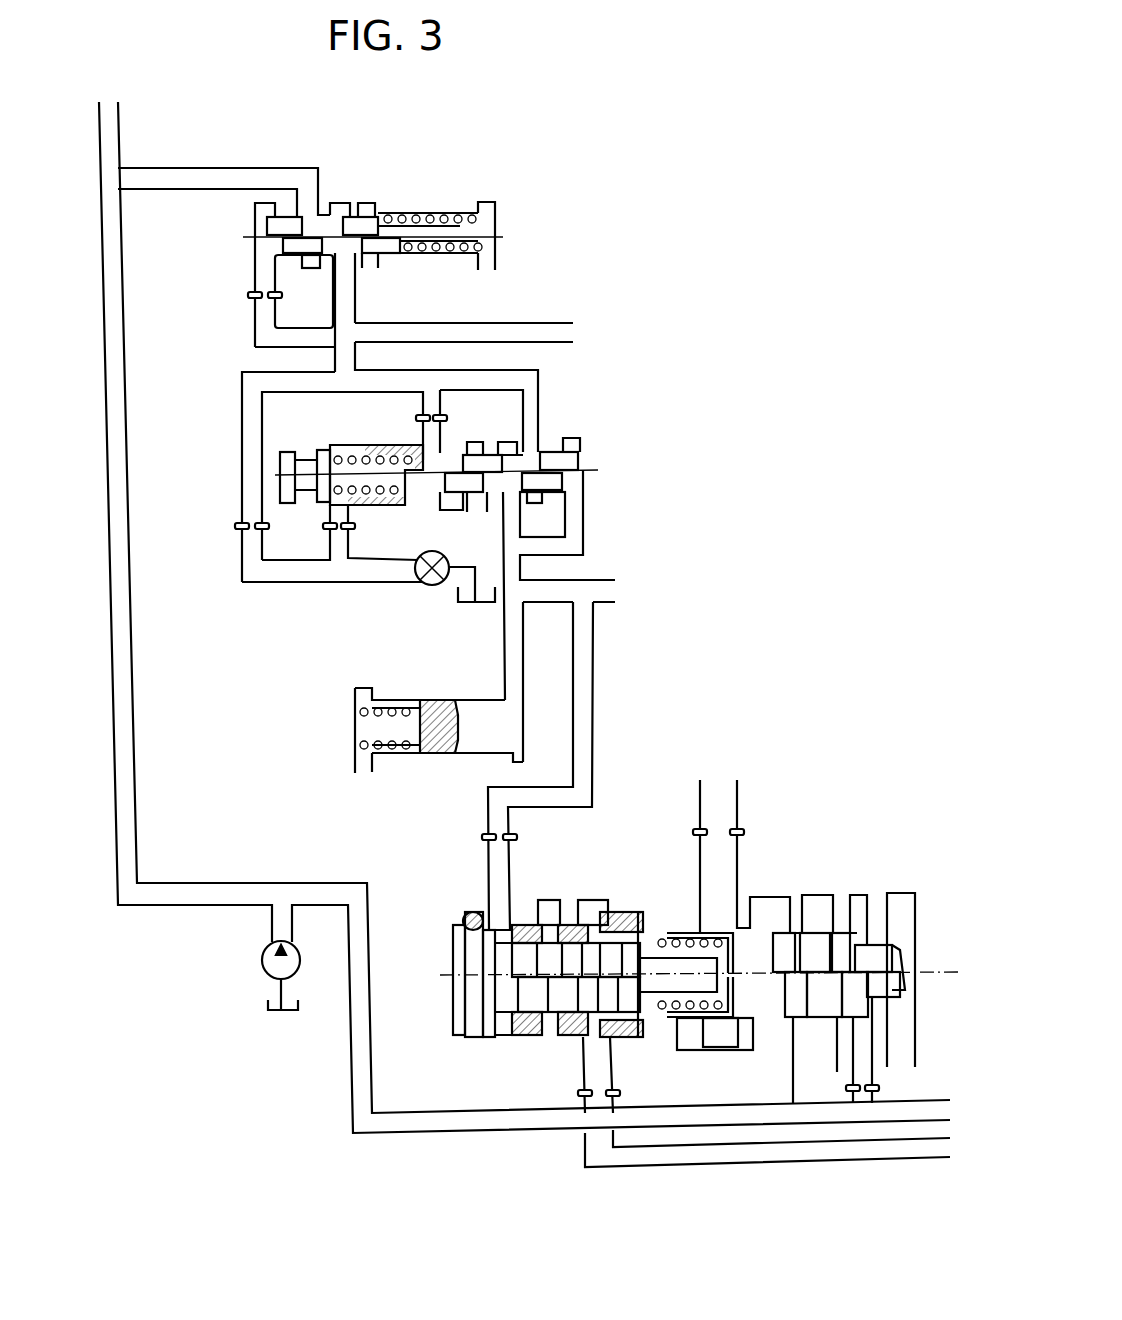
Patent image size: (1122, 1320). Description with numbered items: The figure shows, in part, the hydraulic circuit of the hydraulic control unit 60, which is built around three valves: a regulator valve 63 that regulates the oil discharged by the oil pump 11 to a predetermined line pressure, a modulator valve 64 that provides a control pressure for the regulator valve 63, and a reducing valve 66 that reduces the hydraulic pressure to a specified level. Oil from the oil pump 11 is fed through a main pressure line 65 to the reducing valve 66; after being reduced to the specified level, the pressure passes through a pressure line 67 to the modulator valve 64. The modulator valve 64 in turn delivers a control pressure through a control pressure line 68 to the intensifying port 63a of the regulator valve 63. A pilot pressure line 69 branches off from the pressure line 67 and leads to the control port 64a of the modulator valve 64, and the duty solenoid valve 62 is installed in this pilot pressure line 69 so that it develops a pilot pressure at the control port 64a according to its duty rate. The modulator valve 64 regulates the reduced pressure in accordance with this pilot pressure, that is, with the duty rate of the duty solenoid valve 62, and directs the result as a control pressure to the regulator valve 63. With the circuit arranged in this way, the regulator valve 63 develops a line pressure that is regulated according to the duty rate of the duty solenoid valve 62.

The oil pump 11 is at (262, 966).
The hydraulic control unit 60 is at (593, 291).
The duty solenoid valve 62 is at (425, 590).
The regulator valve 63 is at (699, 973).
The intensifying port 63a is at (512, 900).
The modulator valve 64 is at (488, 545).
The control port 64a is at (470, 517).
The main pressure line 65 is at (133, 713).
The reducing valve 66 is at (455, 195).
The pressure line 67 is at (497, 323).
The control pressure line 68 is at (596, 690).
The pilot pressure line 69 is at (305, 583).